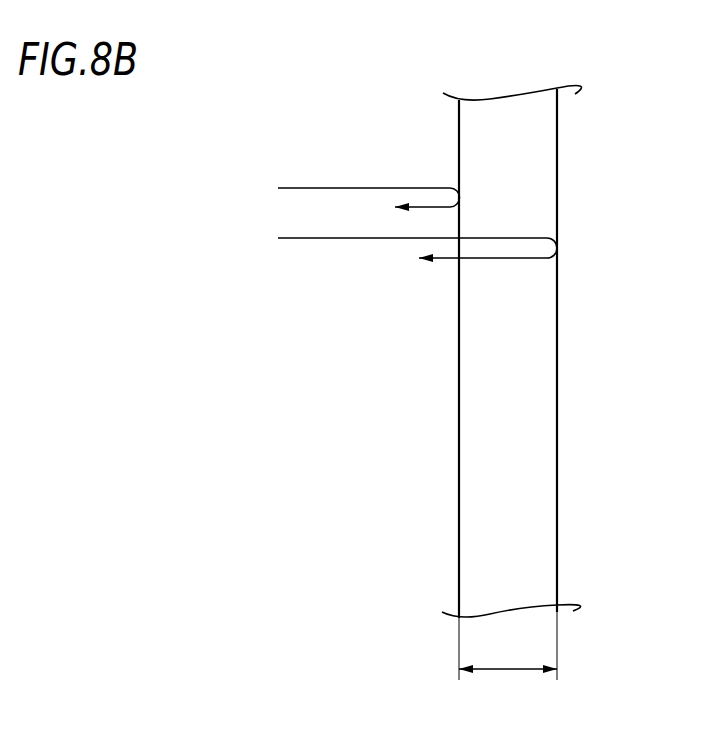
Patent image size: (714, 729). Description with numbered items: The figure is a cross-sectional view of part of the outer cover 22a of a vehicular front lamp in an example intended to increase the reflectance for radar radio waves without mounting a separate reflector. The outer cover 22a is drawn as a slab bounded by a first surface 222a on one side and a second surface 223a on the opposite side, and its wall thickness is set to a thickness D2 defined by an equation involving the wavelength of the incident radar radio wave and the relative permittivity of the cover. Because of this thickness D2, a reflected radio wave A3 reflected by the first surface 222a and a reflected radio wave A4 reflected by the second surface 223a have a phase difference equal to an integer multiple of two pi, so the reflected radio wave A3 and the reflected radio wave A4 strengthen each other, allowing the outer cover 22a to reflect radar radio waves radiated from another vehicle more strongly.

The outer cover 22a is at (509, 352).
The first surface 222a is at (457, 359).
The second surface 223a is at (558, 314).
The reflected radio wave A3 is at (430, 205).
The reflected radio wave A4 is at (450, 263).
The thickness D2 is at (508, 657).